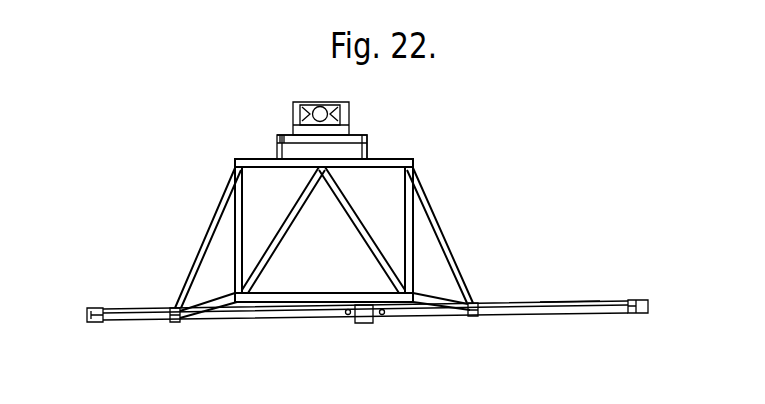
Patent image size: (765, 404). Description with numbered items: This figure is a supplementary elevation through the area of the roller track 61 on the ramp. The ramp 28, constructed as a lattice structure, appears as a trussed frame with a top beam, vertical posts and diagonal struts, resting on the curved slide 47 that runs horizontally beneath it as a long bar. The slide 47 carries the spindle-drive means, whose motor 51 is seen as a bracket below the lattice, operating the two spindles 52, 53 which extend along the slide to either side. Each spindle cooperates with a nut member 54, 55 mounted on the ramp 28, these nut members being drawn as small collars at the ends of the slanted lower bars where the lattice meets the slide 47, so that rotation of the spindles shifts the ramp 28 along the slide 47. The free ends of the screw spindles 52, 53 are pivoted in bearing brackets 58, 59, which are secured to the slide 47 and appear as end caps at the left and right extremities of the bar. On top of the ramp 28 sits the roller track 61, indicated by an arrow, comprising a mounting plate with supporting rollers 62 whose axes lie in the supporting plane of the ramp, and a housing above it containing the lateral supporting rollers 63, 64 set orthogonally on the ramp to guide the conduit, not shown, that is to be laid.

The ramp 28 is at (438, 218).
The curved slide 47 is at (513, 317).
The motor 51 is at (363, 323).
The spindle 52 is at (237, 320).
The spindle 53 is at (563, 315).
The nut member 54 is at (173, 322).
The nut member 55 is at (478, 317).
The bearing bracket 58 is at (95, 323).
The bearing bracket 59 is at (637, 313).
The roller track 61 is at (372, 144).
The supporting rollers 62 is at (313, 129).
The lateral supporting roller 63 is at (293, 115).
The lateral supporting roller 64 is at (349, 109).